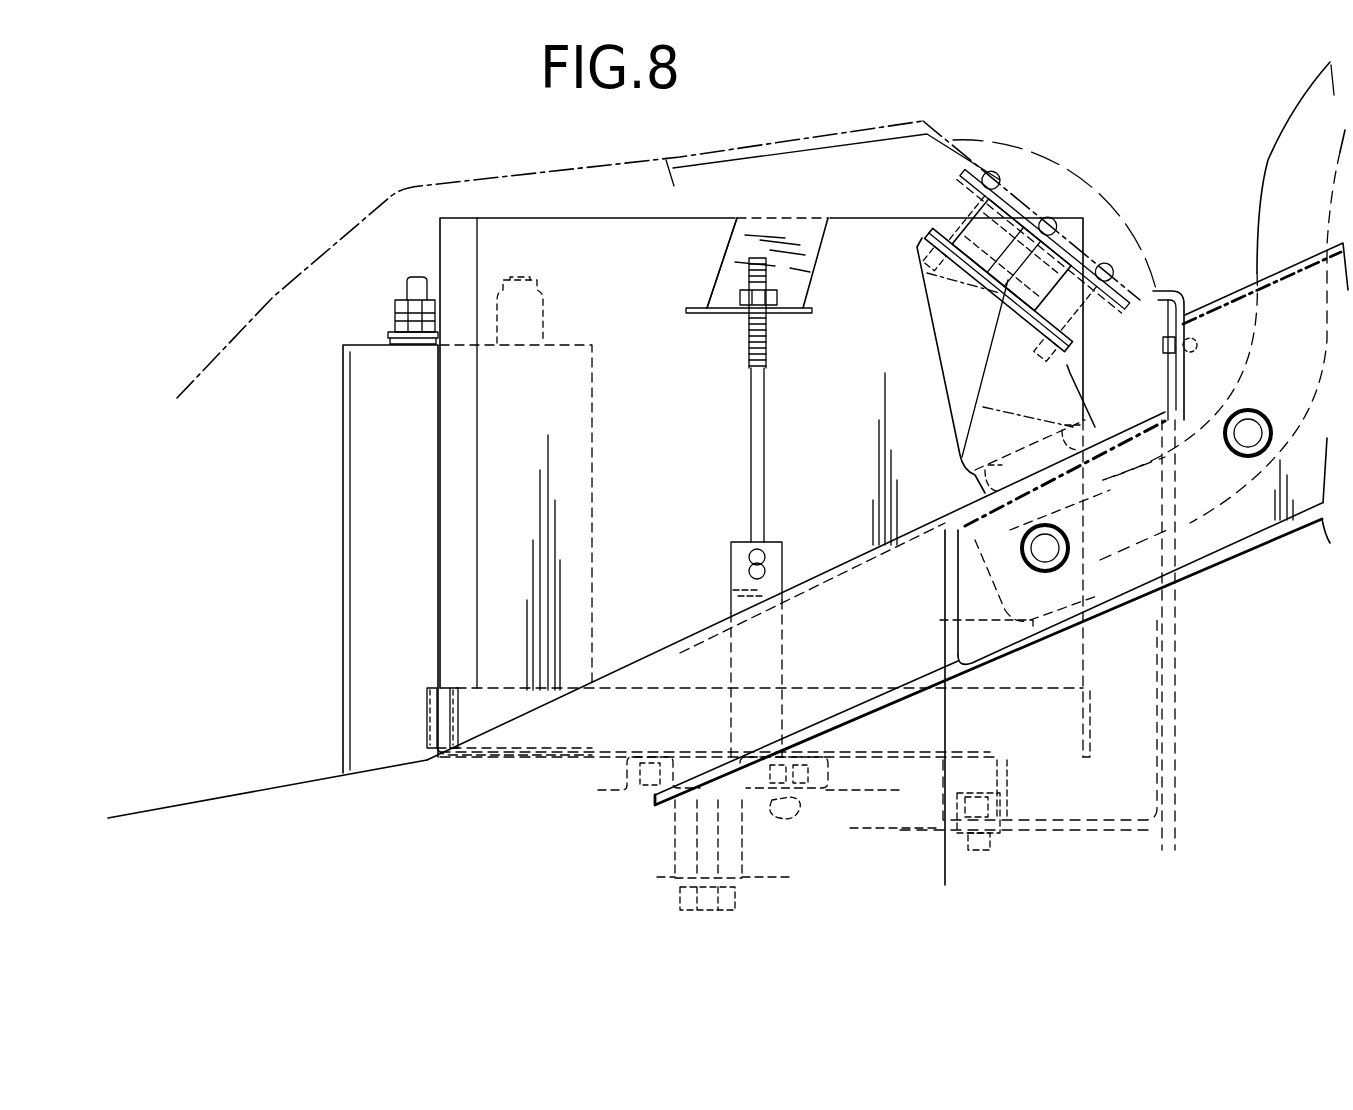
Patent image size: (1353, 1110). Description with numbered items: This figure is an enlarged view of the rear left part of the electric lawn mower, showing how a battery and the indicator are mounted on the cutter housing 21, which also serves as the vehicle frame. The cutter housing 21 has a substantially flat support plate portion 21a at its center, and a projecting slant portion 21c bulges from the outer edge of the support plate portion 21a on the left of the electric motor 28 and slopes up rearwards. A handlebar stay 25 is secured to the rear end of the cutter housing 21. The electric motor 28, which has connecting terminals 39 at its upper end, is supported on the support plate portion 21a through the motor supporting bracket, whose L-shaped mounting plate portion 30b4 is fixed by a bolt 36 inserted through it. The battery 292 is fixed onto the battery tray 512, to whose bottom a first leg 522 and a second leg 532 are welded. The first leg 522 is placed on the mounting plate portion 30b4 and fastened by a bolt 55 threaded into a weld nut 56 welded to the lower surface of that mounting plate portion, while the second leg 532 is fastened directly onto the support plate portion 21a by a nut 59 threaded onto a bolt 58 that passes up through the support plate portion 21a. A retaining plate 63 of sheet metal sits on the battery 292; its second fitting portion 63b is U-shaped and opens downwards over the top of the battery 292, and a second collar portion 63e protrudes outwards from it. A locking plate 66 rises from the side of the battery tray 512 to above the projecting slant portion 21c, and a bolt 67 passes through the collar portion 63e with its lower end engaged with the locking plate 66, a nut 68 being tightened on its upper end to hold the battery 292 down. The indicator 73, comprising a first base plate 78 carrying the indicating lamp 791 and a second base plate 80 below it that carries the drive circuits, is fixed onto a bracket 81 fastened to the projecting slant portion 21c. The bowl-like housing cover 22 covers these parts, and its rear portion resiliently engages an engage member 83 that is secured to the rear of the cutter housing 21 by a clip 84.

The cutter housing 21 is at (266, 779).
The support plate portion 21a is at (1085, 803).
The projecting slant portion 21c is at (846, 560).
The housing cover 22 is at (272, 294).
The handlebar stay 25 is at (1283, 187).
The electric motor 28 is at (426, 529).
The battery 292 is at (698, 495).
The mounting plate portion 30b4 is at (832, 790).
The bolt 36 is at (700, 755).
The connecting terminal 39 is at (414, 289).
The battery tray 512 is at (445, 717).
The first leg 522 is at (652, 765).
The second leg 532 is at (1007, 784).
The bolt 55 is at (797, 755).
The weld nut 56 is at (800, 803).
The bolt 58 is at (977, 853).
The nut 59 is at (988, 793).
The retaining plate 63 is at (708, 248).
The second fitting portion 63b is at (717, 283).
The second collar portion 63e is at (793, 315).
The locking plate 66 is at (738, 566).
The bolt 67 is at (752, 400).
The nut 68 is at (778, 300).
The indicator 73 is at (1007, 183).
The first base plate 78 is at (1082, 252).
The first indicating lamp 791 is at (1052, 226).
The second base plate 80 is at (992, 285).
The bracket 81 is at (1012, 364).
The engage member 83 is at (1167, 290).
The clip 84 is at (1160, 344).